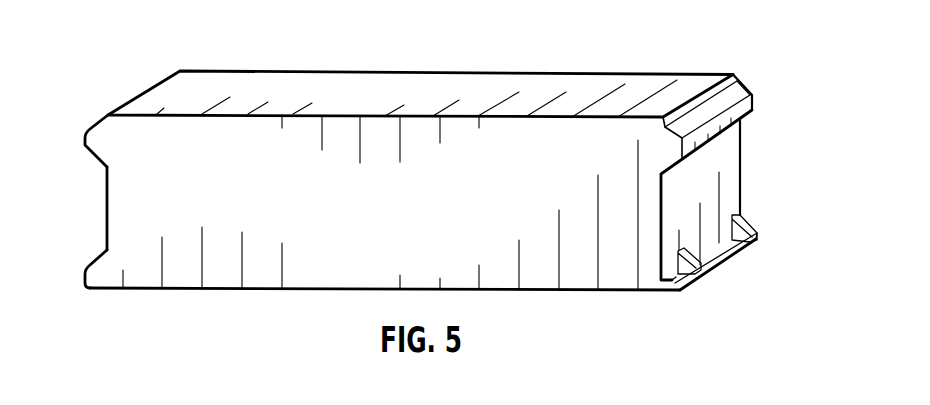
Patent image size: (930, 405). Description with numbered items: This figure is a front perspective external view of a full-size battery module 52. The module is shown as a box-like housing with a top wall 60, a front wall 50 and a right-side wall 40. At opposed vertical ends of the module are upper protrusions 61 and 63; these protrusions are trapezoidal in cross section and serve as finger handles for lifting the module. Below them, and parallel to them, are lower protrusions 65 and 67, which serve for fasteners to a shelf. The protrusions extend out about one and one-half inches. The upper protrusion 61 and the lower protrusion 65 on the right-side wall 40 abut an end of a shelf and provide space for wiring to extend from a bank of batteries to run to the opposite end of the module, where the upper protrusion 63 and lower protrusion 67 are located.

The front wall 50 is at (428, 150).
The battery module 52 is at (533, 154).
The top wall 60 is at (369, 93).
The upper protrusion 61 is at (757, 104).
The upper protrusion 63 is at (96, 126).
The lower protrusion 65 is at (745, 252).
The lower protrusion 67 is at (96, 263).
The right-side wall 40 is at (728, 152).